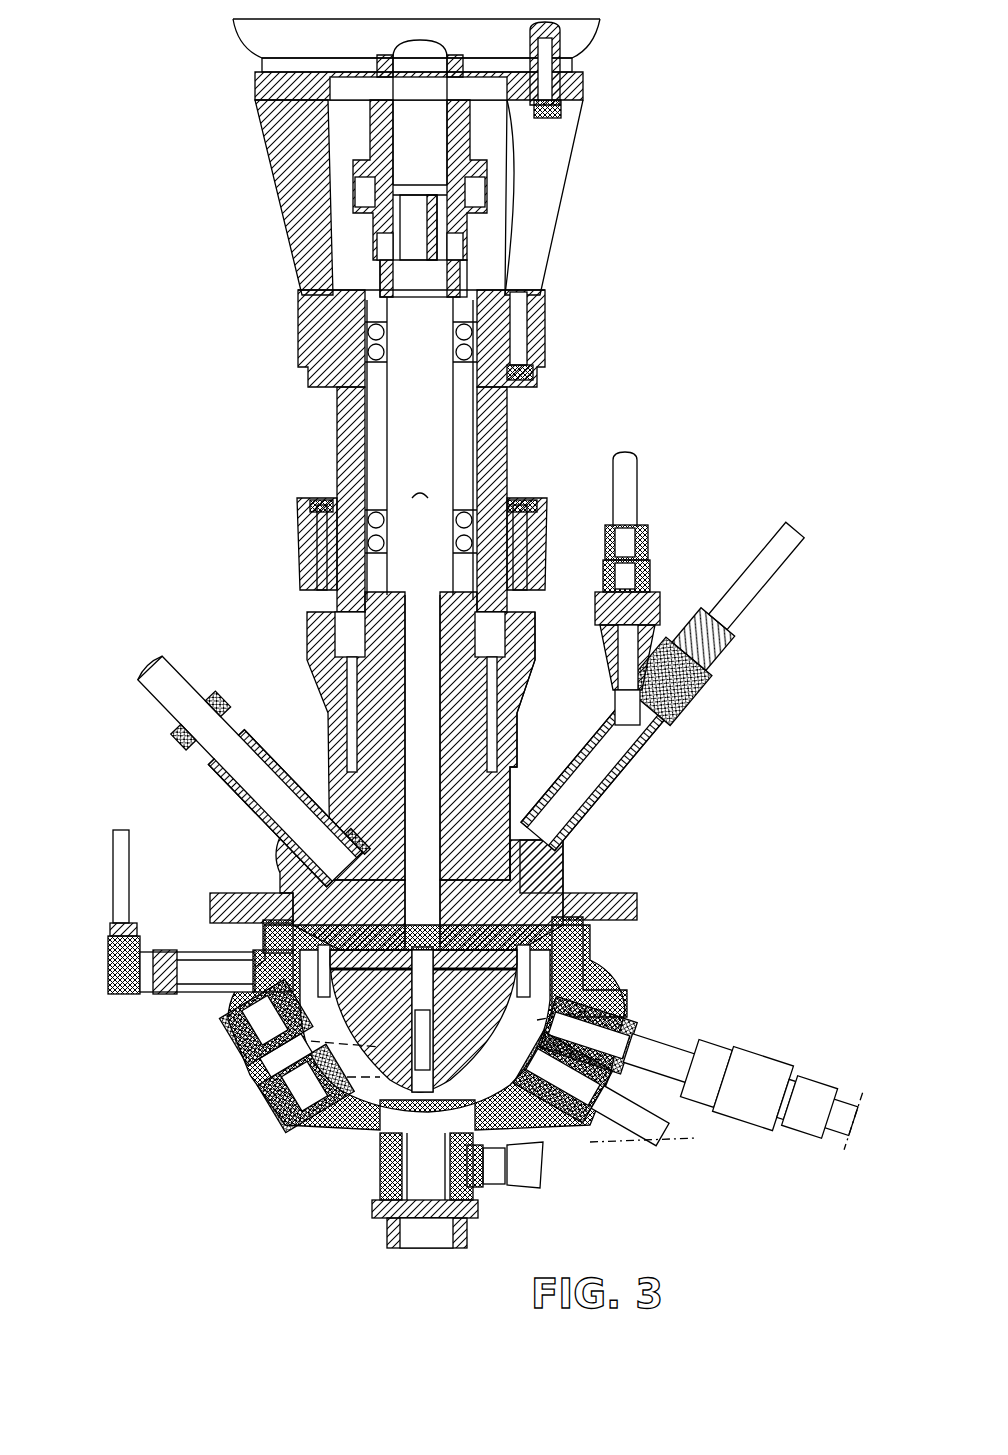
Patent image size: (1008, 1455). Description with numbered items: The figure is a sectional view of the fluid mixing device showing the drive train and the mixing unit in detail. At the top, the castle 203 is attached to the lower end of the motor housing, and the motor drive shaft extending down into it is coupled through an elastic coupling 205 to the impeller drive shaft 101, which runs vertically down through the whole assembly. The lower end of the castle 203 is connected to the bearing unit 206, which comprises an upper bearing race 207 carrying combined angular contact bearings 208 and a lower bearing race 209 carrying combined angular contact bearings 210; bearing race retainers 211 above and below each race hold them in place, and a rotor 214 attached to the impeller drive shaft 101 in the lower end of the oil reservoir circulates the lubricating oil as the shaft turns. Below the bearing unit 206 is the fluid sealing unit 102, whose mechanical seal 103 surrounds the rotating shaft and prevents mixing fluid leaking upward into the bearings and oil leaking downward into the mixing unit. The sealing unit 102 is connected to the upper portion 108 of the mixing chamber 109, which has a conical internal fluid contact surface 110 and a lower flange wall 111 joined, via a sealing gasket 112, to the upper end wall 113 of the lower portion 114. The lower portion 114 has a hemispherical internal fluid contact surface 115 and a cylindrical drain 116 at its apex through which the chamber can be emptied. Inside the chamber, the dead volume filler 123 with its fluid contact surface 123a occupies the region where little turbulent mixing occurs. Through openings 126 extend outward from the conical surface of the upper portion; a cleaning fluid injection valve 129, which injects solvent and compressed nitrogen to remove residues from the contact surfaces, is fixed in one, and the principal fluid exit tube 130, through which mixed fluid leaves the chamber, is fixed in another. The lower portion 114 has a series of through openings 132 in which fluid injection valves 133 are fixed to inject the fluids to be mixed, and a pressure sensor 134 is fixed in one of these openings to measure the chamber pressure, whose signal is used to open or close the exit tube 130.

The impeller drive shaft 101 is at (433, 537).
The fluid sealing unit 102 is at (318, 655).
The mechanical seal 103 is at (357, 723).
The upper portion of mixing chamber 108 is at (522, 760).
The mixing chamber 109 is at (352, 1137).
The conical internal fluid contact surface 110 is at (280, 870).
The lower flange wall 111 is at (637, 903).
The sealing gasket 112 is at (587, 928).
The upper end wall 113 is at (207, 910).
The lower portion of mixing chamber 114 is at (287, 1087).
The hemispherical internal fluid contact surface 115 is at (547, 1120).
The cylindrical drain 116 is at (422, 1248).
The dead volume filler 123 is at (367, 1045).
The fluid contact surface of volume filler 123a is at (585, 973).
The through openings 126 is at (287, 840).
The cleaning fluid injection valve 129 is at (700, 673).
The principal fluid exit tube 130 is at (173, 685).
The through openings 132 is at (250, 1030).
The fluid injection valves 133 is at (770, 1047).
The pressure sensor 134 is at (110, 973).
The castle 203 is at (565, 137).
The elastic coupling 205 is at (340, 215).
The bearing unit 206 is at (340, 420).
The upper bearing race 207 is at (545, 340).
The combined angular contact bearings 208 is at (551, 295).
The lower bearing race 209 is at (297, 510).
The combined angular contact bearings 210 is at (500, 470).
The bearing race retainers 211 is at (370, 290).
The rotor 214 is at (540, 557).